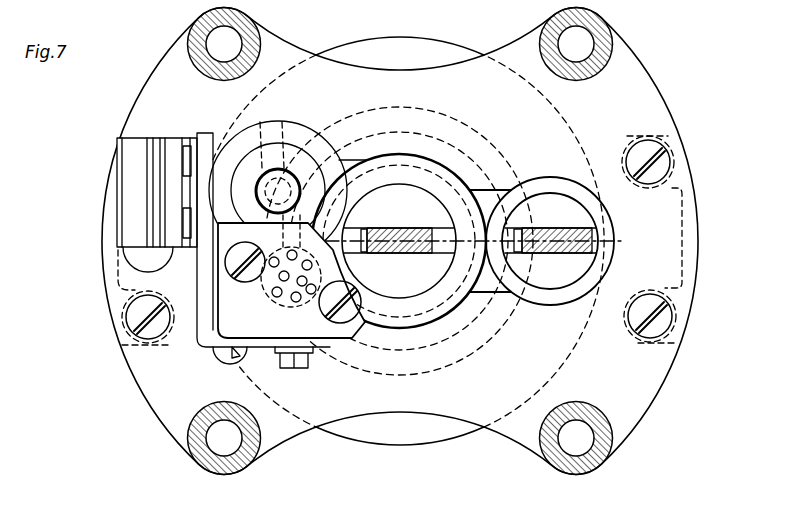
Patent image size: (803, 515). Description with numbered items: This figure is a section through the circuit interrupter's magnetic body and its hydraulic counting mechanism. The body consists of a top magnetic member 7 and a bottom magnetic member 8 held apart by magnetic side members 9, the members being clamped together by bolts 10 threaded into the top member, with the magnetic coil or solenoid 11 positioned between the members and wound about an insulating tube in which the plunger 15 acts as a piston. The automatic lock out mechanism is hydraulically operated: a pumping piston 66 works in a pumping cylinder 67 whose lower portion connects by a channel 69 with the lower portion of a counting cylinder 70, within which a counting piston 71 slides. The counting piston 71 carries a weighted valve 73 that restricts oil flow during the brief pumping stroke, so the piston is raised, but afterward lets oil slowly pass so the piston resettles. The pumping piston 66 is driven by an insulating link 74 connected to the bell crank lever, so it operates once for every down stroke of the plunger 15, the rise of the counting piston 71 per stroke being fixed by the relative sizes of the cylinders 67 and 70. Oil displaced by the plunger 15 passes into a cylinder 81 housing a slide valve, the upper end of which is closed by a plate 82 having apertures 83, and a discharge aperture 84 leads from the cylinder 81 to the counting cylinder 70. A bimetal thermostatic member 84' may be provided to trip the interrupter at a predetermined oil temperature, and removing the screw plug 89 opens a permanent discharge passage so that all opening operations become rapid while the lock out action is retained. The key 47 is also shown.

The top magnetic member 7 is at (642, 390).
The bottom magnetic member 8 is at (278, 192).
The magnetic side members 9 is at (110, 284).
The bolts 10 is at (135, 249).
The magnetic coil or solenoid 11 is at (386, 440).
The plunger 15 is at (418, 290).
The key in hub slot 47 is at (405, 232).
The pumping piston 66 is at (548, 288).
The pumping cylinder 67 is at (551, 177).
The channel 69 is at (480, 132).
The counting cylinder 70 is at (318, 128).
The counting piston 71 is at (270, 130).
The weighted valve 73 is at (262, 201).
The insulating link 74 is at (552, 233).
The cylinder 81 is at (262, 306).
The plate 82 is at (246, 356).
The apertures 83 is at (268, 284).
The discharge aperture 84 is at (342, 240).
The bimetal thermostatic member 84' is at (132, 205).
The screw plug 89 is at (299, 370).